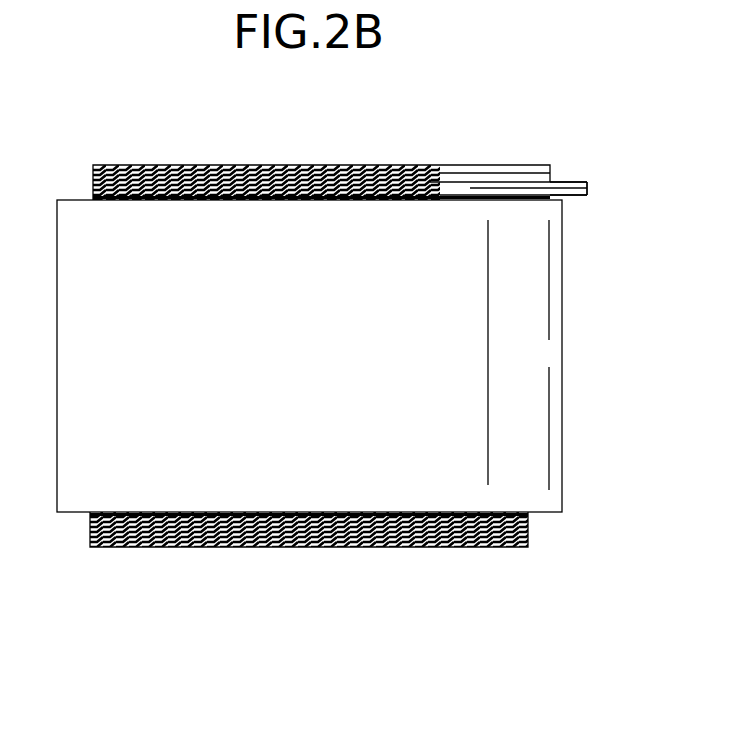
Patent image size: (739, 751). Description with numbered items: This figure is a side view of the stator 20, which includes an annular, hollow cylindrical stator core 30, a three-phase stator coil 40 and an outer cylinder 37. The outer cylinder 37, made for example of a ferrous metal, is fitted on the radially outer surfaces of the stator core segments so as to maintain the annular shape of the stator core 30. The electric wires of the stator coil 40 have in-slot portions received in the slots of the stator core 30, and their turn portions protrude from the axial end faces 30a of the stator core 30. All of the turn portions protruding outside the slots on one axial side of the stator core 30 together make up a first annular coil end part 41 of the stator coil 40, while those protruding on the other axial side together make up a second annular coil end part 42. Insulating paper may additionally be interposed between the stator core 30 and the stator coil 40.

The stator 20 is at (338, 337).
The stator core 30 is at (349, 356).
The axial end face of the stator core 30a is at (562, 203).
The outer cylinder 37 is at (543, 352).
The stator coil 40 is at (315, 340).
The first annular coil end part 41 is at (93, 185).
The second annular coil end part 42 is at (90, 527).